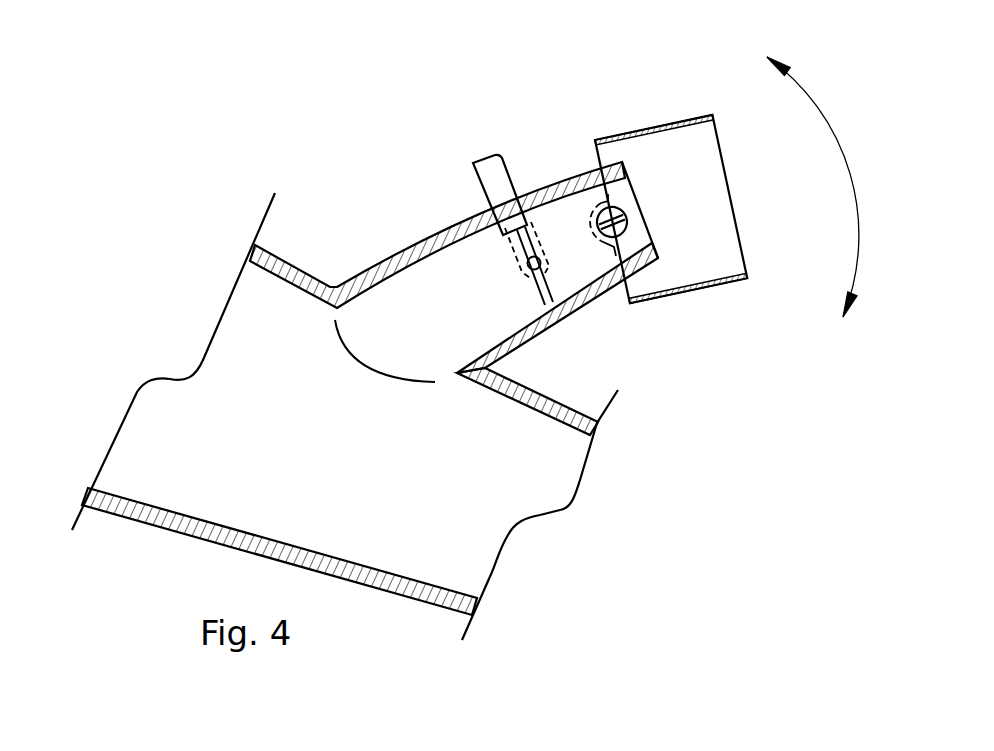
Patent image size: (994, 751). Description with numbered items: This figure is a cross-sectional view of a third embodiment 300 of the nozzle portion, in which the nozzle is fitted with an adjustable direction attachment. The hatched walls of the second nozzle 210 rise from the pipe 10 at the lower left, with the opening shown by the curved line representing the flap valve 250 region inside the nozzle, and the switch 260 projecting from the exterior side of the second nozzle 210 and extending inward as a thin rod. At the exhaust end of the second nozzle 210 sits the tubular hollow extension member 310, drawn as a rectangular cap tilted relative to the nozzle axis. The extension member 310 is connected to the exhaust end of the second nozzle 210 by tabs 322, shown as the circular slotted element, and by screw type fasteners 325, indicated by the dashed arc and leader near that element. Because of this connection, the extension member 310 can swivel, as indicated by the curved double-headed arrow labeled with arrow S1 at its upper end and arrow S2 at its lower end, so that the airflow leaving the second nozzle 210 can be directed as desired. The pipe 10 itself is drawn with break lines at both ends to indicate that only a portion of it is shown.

The pipe 10 is at (148, 527).
The second nozzle 210 is at (416, 238).
The flap valve 250 is at (492, 275).
The switch 260 is at (490, 170).
The third embodiment 300 is at (365, 192).
The tubular hollow extension member 310 is at (652, 117).
The tabs 322 is at (595, 197).
The screw type fasteners 325 is at (620, 236).
The arrow S1 is at (809, 165).
The arrow S2 is at (864, 316).